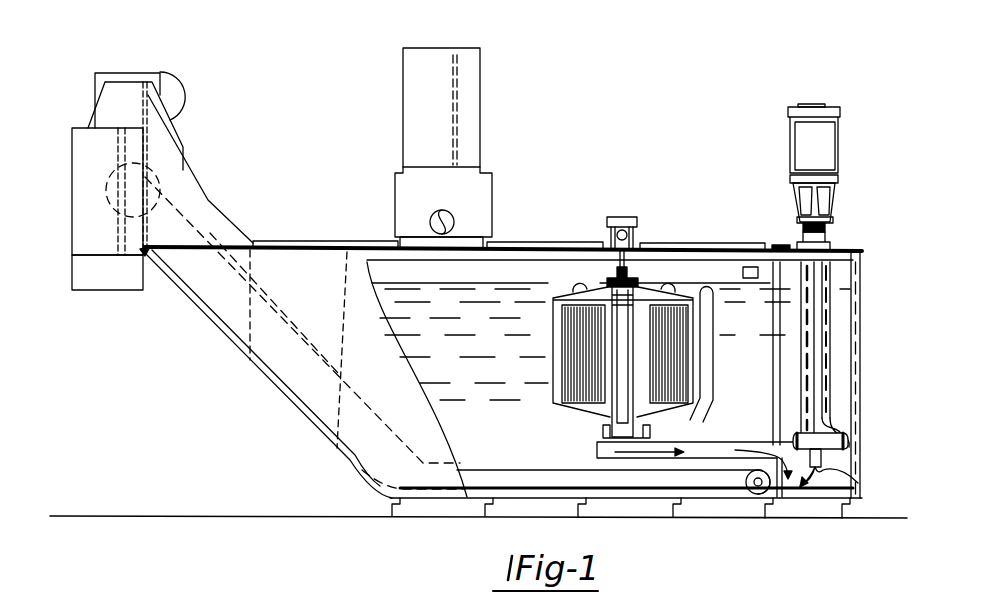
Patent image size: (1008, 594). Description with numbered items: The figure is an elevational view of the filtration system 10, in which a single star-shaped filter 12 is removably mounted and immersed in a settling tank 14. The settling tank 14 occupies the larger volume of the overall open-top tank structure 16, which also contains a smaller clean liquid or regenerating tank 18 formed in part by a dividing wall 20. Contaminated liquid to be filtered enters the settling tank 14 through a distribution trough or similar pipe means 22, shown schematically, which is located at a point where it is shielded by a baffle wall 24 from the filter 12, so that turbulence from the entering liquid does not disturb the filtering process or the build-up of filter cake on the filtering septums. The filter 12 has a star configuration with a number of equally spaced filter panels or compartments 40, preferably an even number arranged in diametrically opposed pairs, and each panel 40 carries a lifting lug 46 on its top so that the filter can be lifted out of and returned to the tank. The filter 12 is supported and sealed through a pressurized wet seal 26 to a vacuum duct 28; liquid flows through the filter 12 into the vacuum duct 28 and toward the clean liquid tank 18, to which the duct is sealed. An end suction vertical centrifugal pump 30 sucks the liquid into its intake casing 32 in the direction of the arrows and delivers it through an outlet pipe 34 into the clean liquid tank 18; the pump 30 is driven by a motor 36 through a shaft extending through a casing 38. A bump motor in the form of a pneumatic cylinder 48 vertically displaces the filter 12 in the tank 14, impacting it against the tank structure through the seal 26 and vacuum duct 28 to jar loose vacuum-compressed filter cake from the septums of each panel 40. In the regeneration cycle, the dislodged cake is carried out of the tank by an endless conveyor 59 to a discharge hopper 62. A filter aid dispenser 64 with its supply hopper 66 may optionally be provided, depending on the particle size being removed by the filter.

The filtration system 10 is at (683, 190).
The filter 12 is at (582, 358).
The settling tank 14 is at (479, 420).
The tank structure 16 is at (282, 390).
The clean liquid tank 18 is at (845, 356).
The dividing wall 20 is at (773, 390).
The distribution trough 22 is at (753, 263).
The baffle wall 24 is at (713, 321).
The pressurized wet seal 26 is at (603, 432).
The vacuum duct 28 is at (711, 440).
The end suction vertical centrifugal pump 30 is at (833, 427).
The intake casing 32 is at (818, 477).
The outlet pipe 34 is at (813, 327).
The motor 36 is at (840, 147).
The casing 38 is at (824, 292).
The filter panels 40 is at (590, 387).
The lifting lug 46 is at (584, 289).
The bump motor 48 is at (620, 216).
The endless conveyor 59 is at (528, 465).
The discharge hopper 62 is at (72, 280).
The filter aid dispenser 64 is at (493, 203).
The supply hopper 66 is at (480, 113).